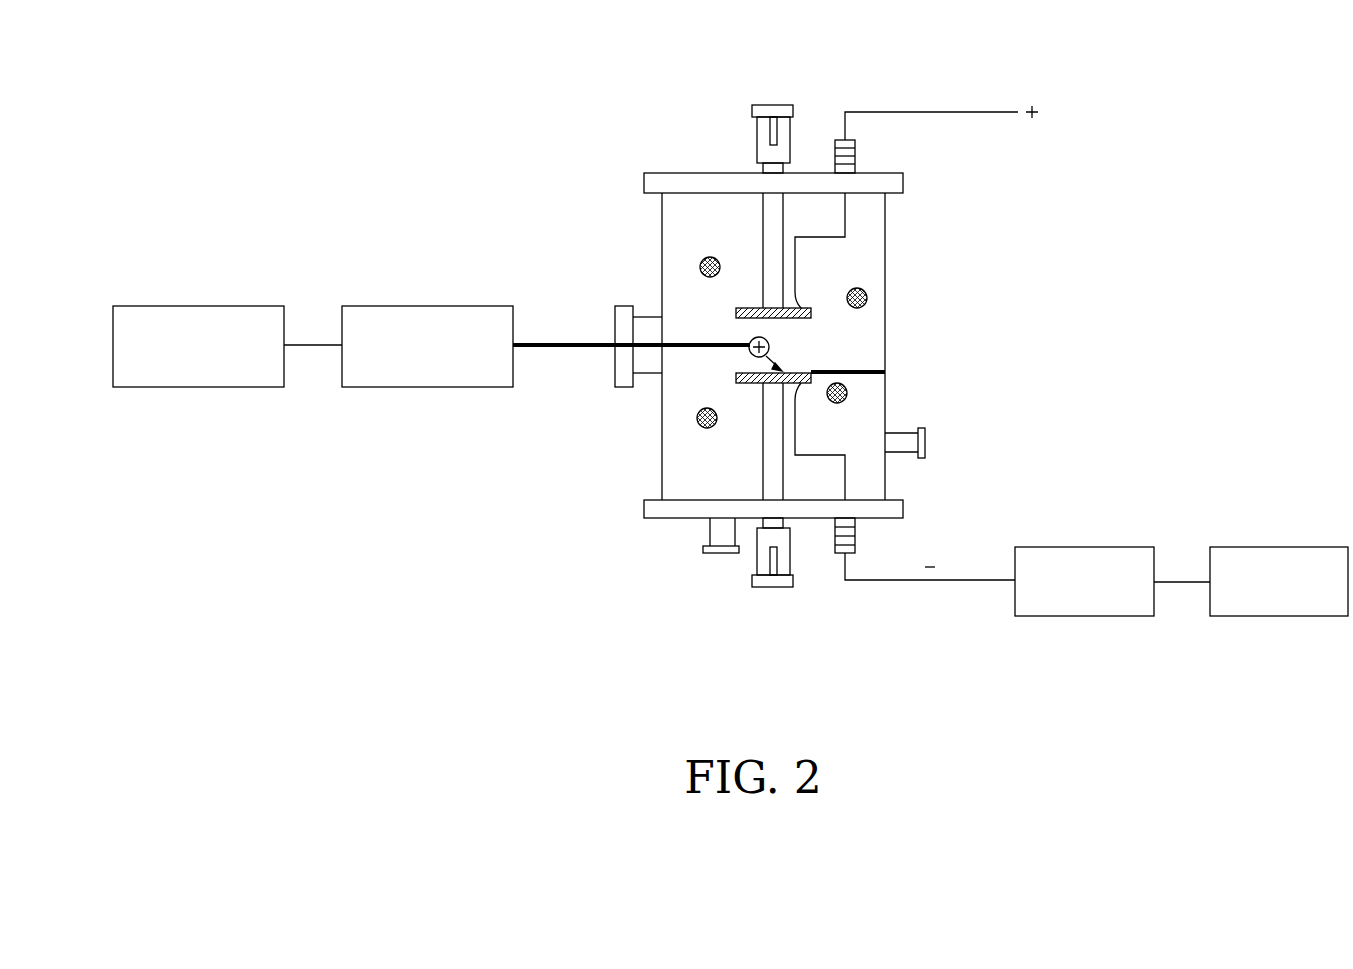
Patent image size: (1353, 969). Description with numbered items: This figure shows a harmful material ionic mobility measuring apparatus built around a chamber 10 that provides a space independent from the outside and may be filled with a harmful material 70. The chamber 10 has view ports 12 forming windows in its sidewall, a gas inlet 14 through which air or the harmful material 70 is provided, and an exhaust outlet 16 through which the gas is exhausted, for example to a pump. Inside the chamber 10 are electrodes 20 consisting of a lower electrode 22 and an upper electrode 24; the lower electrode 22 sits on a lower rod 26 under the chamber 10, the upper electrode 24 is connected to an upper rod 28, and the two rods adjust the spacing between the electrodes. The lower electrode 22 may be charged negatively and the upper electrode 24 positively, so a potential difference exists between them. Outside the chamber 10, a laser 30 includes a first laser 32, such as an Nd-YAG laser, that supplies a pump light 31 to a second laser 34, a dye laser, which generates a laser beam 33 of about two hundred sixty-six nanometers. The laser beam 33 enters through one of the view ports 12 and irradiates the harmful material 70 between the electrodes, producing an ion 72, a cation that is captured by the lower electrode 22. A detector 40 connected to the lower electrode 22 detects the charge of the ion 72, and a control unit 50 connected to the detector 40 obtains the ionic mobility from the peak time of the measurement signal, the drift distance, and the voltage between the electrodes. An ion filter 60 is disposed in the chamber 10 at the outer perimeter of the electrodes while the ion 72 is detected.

The chamber 10 is at (712, 173).
The view ports 12 is at (615, 372).
The gas inlet 14 is at (722, 553).
The exhaust outlet 16 is at (925, 440).
The electrodes 20 is at (886, 327).
The lower electrode 22 is at (801, 372).
The upper electrode 24 is at (801, 306).
The lower rod 26 is at (772, 587).
The upper rod 28 is at (772, 105).
The laser 30 is at (313, 285).
The pump light 31 is at (313, 345).
The first laser 32 is at (197, 306).
The laser beam 33 is at (548, 345).
The second laser 34 is at (427, 306).
The detector 40 is at (1115, 547).
The control unit 50 is at (1308, 547).
The ion filter 60 is at (860, 378).
The harmful material 70 is at (700, 265).
The ion 72 is at (750, 340).